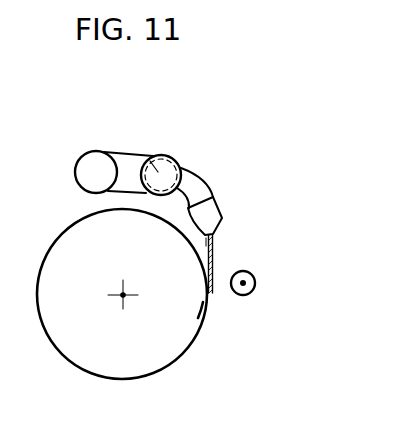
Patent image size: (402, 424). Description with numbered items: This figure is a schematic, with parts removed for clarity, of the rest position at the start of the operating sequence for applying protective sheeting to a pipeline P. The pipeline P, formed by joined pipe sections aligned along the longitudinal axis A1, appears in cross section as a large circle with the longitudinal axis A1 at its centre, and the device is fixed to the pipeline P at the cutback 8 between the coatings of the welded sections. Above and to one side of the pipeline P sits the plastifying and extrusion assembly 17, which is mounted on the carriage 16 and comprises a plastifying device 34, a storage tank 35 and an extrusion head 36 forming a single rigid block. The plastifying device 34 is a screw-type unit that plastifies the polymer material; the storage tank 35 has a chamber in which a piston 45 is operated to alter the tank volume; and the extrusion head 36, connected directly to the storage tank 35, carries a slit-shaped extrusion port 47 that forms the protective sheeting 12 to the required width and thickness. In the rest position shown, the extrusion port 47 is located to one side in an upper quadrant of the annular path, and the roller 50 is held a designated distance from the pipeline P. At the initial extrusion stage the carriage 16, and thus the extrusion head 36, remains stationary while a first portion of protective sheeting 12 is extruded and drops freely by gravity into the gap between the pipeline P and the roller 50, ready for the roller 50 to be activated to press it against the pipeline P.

The cutback 8 is at (193, 347).
The longitudinal axis A1 is at (121, 297).
The protective sheeting 12 is at (214, 238).
The carriage 16 is at (210, 165).
The plastifying and extrusion assembly 17 is at (170, 144).
The plastifying device 34 is at (76, 168).
The storage tank 35 is at (185, 157).
The extrusion head 36 is at (220, 207).
The piston 45 is at (150, 161).
The extrusion port 47 is at (203, 242).
The roller 50 is at (258, 282).
The pipeline P is at (207, 312).